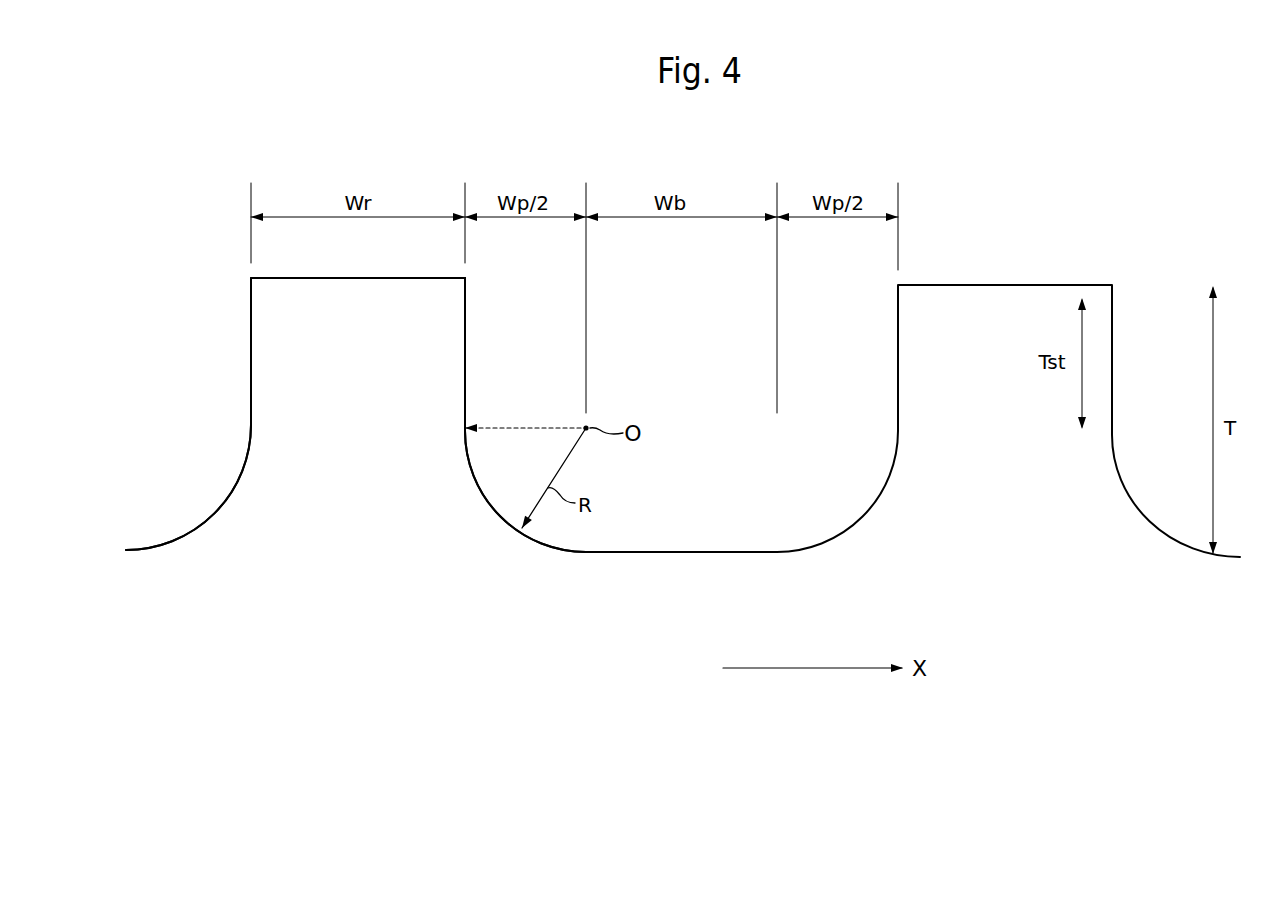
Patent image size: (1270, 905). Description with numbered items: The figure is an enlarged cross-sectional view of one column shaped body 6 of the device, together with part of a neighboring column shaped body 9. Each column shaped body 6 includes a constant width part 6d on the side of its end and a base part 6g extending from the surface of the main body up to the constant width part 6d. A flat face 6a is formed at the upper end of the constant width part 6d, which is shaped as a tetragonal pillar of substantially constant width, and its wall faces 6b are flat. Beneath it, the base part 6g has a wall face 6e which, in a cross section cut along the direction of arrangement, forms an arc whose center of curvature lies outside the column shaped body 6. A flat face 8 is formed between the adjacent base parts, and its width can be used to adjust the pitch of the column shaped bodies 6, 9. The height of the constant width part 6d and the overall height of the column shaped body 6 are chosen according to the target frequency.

The column shaped body 6 is at (270, 307).
The flat face 6a is at (357, 278).
The wall face 6b is at (465, 358).
The constant width part 6d is at (437, 315).
The wall face of base part 6e is at (480, 490).
The base part 6g is at (256, 483).
The flat face 8 is at (700, 552).
The adjacent rail / groove step 9 is at (880, 280).